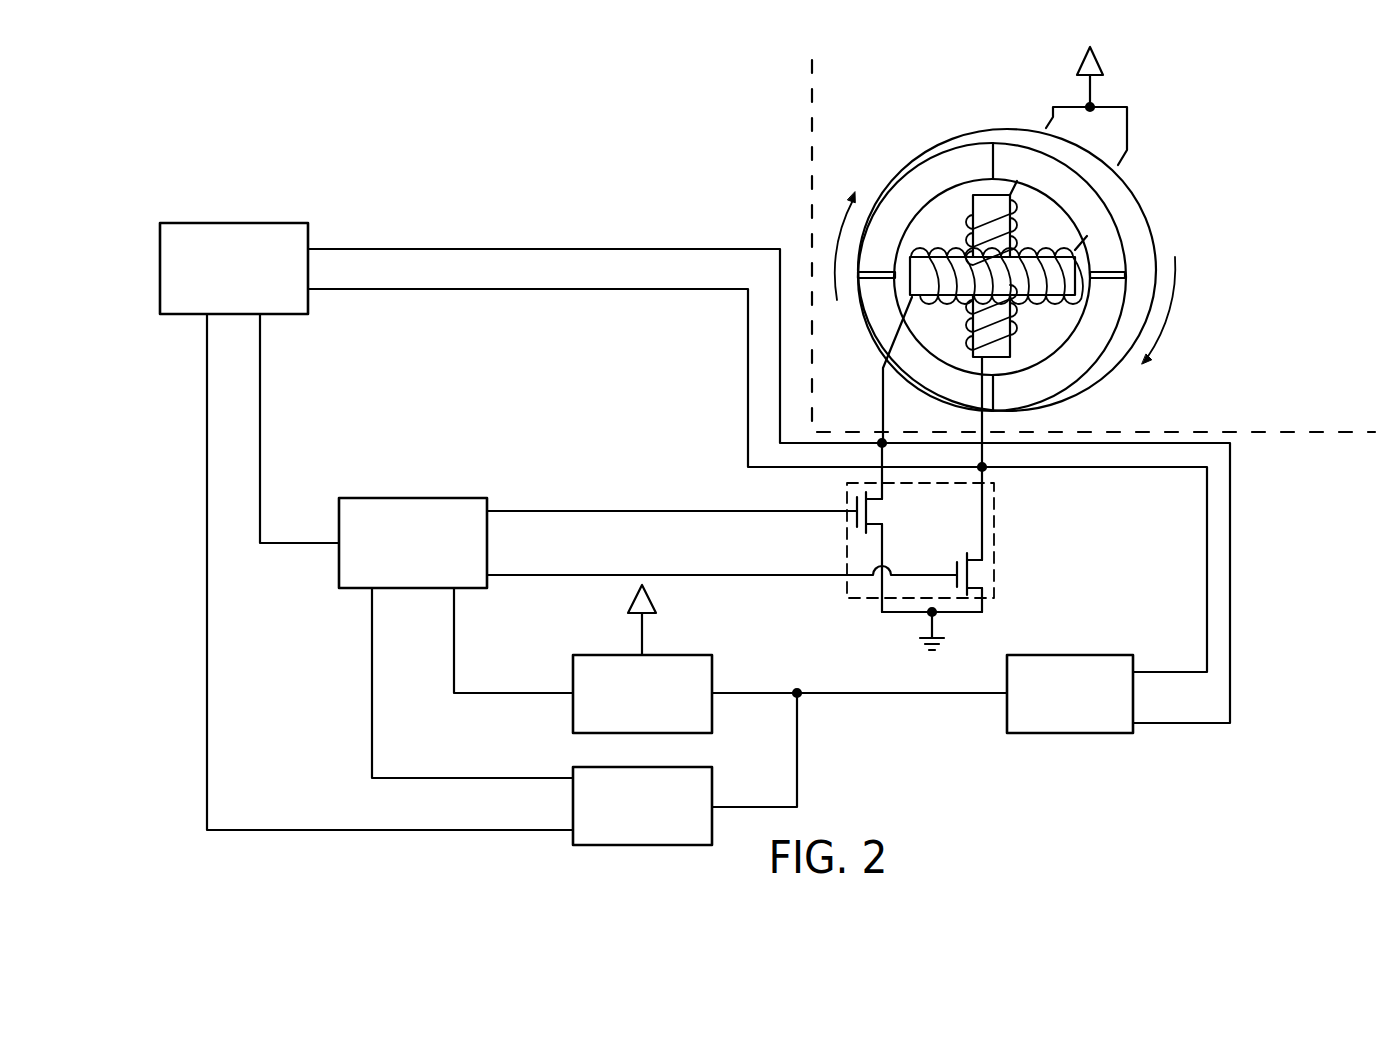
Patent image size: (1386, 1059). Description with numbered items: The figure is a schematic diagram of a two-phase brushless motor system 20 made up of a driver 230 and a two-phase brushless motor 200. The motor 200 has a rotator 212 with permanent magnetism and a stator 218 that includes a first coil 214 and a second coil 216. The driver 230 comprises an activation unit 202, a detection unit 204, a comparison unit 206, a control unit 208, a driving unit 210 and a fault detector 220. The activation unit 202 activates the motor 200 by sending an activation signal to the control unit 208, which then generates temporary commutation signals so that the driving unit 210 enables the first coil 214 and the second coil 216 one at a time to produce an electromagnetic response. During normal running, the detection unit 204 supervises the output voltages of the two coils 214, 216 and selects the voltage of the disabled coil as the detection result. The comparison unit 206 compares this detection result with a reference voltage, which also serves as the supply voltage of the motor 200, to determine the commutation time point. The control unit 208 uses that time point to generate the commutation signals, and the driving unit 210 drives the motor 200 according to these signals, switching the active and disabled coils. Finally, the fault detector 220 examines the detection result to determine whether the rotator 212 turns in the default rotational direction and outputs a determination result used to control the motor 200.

The two-phase brushless motor system 20 is at (1267, 110).
The two-phase brushless motor 200 is at (1290, 350).
The driver 230 is at (1290, 524).
The activation unit 202 is at (227, 222).
The detection unit 204 is at (1072, 735).
The comparison unit 206 is at (695, 654).
The control unit 208 is at (412, 497).
The driving unit 210 is at (995, 523).
The rotator 212 is at (996, 135).
The first coil 214 is at (935, 256).
The second coil 216 is at (1014, 346).
The stator 218 is at (1013, 201).
The fault detector 220 is at (695, 766).